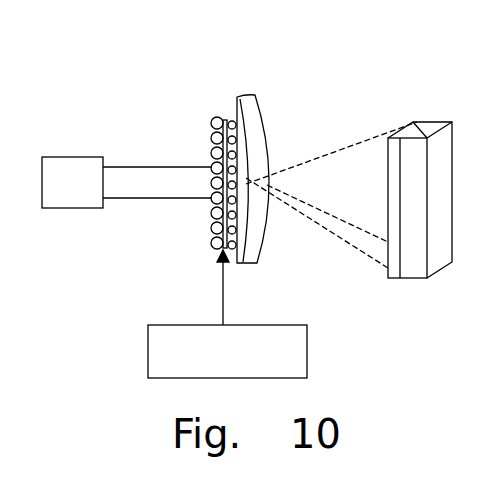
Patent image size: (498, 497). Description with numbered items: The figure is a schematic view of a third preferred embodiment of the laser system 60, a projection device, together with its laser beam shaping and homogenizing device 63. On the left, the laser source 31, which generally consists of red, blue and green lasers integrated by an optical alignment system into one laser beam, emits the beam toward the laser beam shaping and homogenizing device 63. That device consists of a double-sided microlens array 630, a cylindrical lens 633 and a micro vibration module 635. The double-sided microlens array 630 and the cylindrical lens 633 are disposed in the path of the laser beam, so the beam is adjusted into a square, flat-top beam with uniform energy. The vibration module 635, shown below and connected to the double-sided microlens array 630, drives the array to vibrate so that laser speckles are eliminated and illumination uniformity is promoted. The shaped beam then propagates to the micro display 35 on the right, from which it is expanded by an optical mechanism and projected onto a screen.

The laser system 60 is at (64, 100).
The laser beam shaping and homogenizing device 63 is at (209, 74).
The double-sided microlens array 630 is at (212, 126).
The cylindrical lens 633 is at (252, 263).
The micro vibration module 635 is at (307, 350).
The laser source 31 is at (72, 199).
The micro display 35 is at (437, 120).